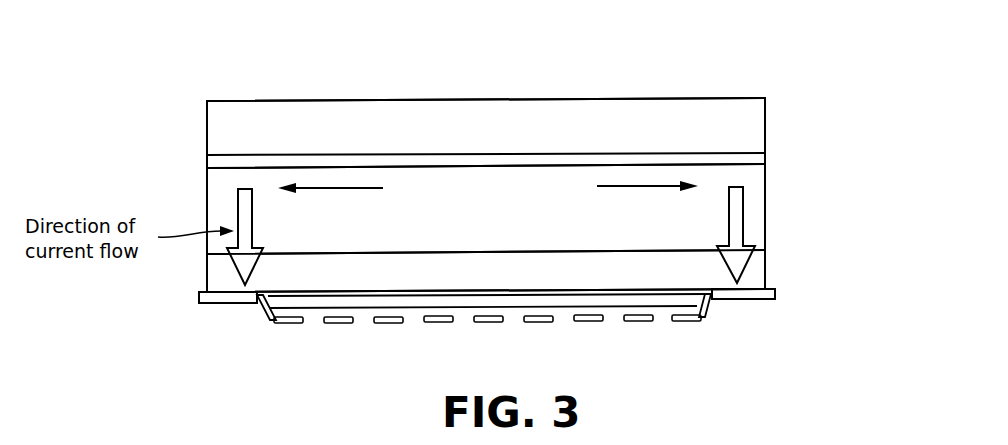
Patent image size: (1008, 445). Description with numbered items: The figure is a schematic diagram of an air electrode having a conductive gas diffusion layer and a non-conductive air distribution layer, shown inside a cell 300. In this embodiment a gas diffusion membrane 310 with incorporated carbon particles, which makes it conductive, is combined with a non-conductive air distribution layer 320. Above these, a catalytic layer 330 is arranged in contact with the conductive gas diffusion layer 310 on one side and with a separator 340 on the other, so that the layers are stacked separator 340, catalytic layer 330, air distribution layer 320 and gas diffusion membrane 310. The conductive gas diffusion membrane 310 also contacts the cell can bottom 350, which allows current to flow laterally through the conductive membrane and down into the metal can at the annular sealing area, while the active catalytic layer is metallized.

The cell 300 is at (718, 78).
The separator 340 is at (765, 127).
The catalytic layer 330 is at (765, 212).
The non-conductive air distribution layer 320 is at (765, 280).
The cell can bottom 350 is at (232, 322).
The gas diffusion membrane 310 is at (660, 310).